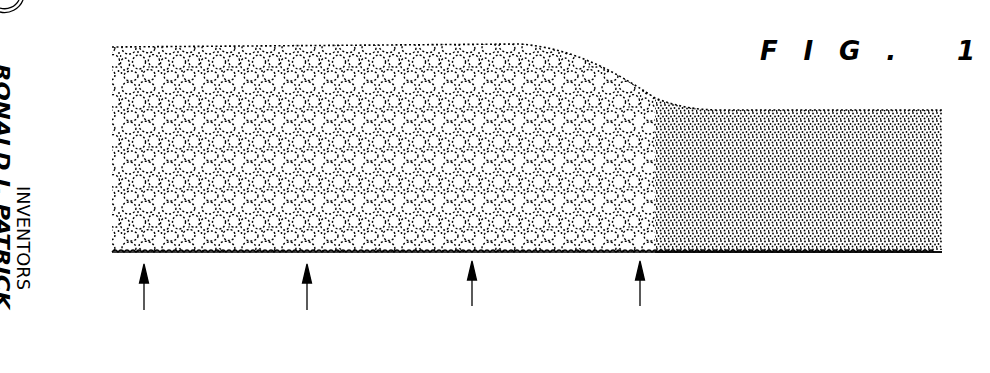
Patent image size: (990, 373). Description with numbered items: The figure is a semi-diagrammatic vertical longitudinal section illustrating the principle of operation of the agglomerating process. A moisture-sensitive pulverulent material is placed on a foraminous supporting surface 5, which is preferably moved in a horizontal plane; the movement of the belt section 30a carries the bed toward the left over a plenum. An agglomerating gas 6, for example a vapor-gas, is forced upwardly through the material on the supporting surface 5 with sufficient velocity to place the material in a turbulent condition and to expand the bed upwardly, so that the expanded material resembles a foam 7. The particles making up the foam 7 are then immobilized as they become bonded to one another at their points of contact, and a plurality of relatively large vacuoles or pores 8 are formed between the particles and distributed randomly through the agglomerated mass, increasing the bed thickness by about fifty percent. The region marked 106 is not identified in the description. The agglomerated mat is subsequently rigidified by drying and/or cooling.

The foraminous supporting surface 5 is at (133, 254).
The agglomerating gas 6 is at (147, 293).
The foam 7 is at (519, 46).
The vacuoles or pores 8 is at (253, 68).
The belt section 30a is at (875, 252).
The fine-grained material 106 is at (890, 117).